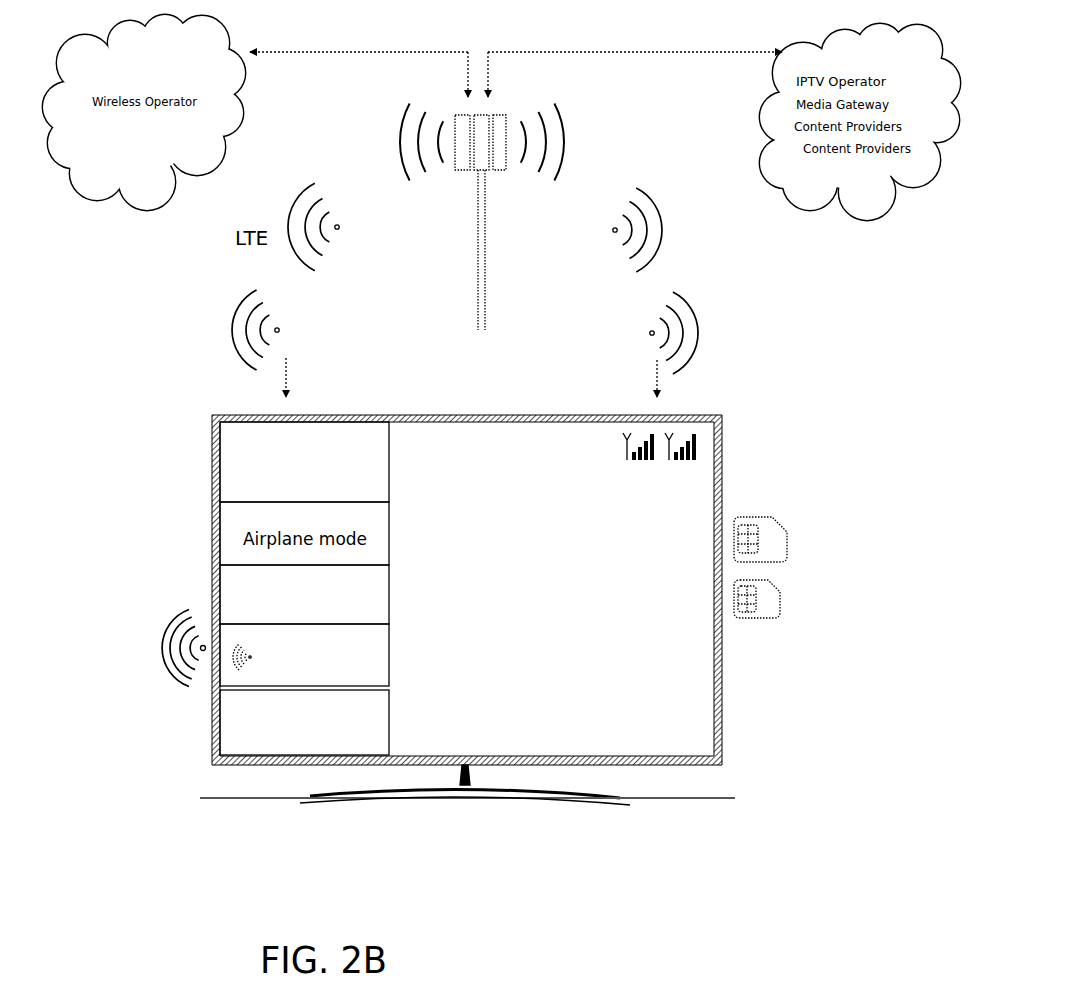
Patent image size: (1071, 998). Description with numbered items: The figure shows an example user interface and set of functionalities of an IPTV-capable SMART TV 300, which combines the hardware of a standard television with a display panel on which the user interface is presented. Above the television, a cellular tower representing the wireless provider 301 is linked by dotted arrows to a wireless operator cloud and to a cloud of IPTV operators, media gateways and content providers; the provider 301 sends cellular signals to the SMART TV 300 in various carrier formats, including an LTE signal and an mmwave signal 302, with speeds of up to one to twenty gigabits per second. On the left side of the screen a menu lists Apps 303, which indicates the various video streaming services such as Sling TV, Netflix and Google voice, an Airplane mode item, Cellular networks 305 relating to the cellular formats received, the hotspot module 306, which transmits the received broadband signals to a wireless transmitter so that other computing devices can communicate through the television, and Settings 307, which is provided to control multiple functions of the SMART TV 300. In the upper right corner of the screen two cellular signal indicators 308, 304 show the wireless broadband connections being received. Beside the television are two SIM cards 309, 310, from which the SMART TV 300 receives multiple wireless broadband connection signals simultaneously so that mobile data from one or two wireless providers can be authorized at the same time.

The SMART TV 300 is at (725, 462).
The wireless provider 301 is at (487, 112).
The mmwave signal 302 is at (663, 197).
The Apps 303 is at (363, 452).
The cellular signal indicator 304 is at (700, 440).
The Cellular networks 305 is at (383, 593).
The hotspot module 306 is at (383, 660).
The Settings 307 is at (372, 732).
The cellular signal indicator 308 is at (645, 440).
The first SIM card 309 is at (775, 530).
The second SIM card 310 is at (768, 602).